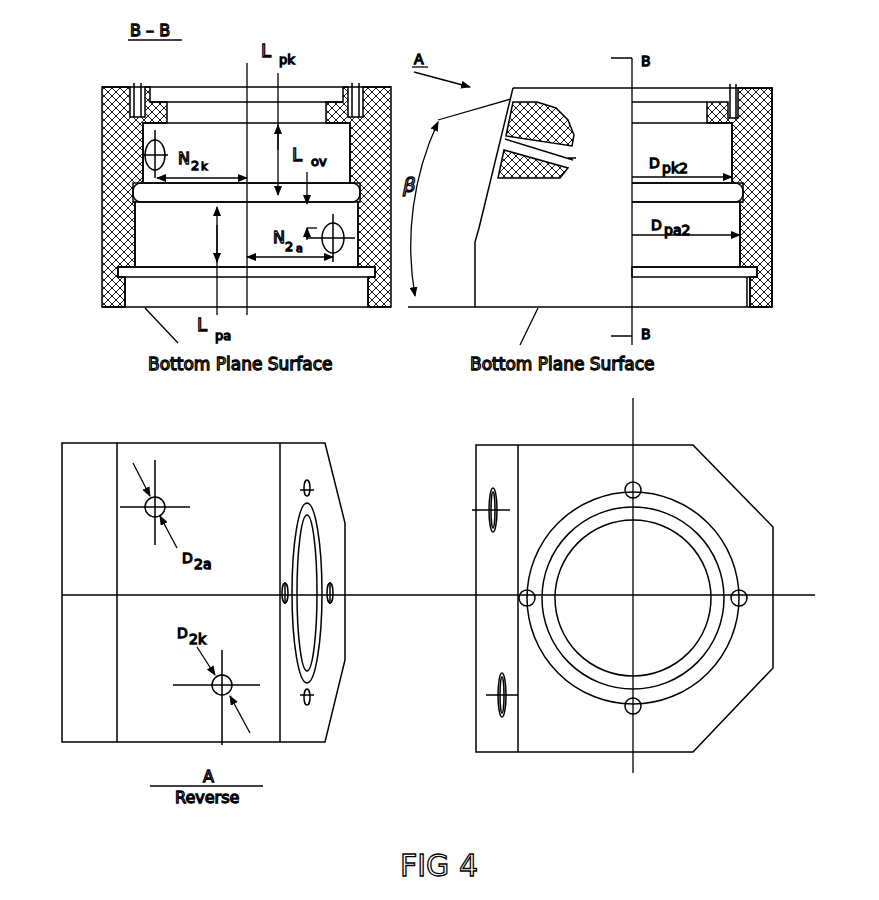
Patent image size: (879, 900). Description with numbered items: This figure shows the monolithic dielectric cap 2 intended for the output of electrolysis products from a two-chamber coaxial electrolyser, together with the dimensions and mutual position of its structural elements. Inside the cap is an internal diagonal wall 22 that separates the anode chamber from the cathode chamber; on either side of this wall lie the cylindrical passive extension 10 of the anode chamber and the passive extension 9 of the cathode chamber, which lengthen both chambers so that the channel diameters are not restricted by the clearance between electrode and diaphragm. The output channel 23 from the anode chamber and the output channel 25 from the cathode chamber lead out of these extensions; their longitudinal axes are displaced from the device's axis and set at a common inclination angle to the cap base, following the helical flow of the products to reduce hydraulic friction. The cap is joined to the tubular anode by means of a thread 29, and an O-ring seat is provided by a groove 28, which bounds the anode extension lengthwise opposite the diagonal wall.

The monolithic dielectric cap 2 is at (702, 468).
The passive extension of the cathode chamber 9 is at (723, 170).
The passive extension of the anode chamber 10 is at (730, 222).
The diagonal wall 22 is at (140, 201).
The output channel from the anode chamber 23 is at (135, 228).
The output channel from the cathode chamber 25 is at (150, 153).
The groove 28 is at (118, 268).
The thread 29 is at (110, 302).